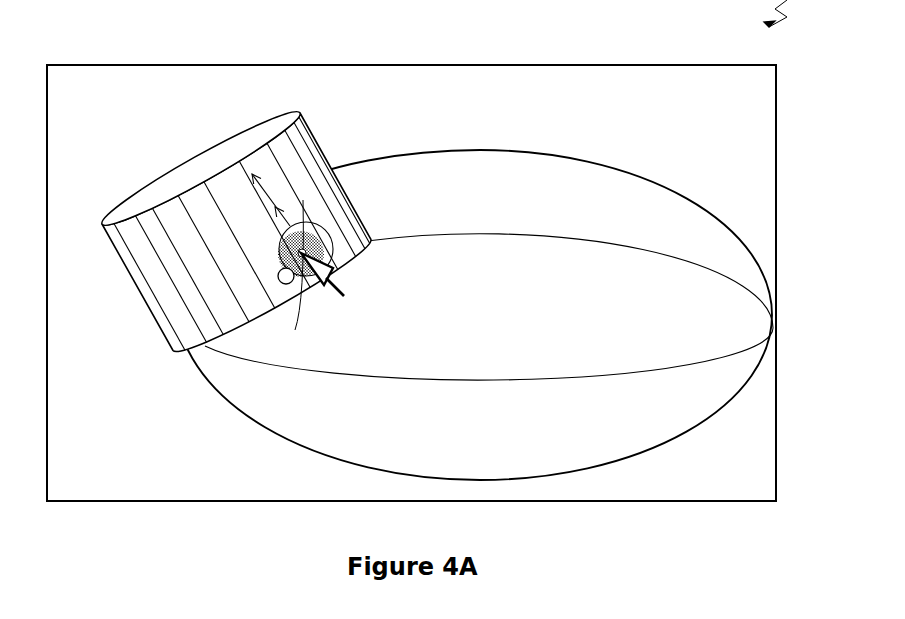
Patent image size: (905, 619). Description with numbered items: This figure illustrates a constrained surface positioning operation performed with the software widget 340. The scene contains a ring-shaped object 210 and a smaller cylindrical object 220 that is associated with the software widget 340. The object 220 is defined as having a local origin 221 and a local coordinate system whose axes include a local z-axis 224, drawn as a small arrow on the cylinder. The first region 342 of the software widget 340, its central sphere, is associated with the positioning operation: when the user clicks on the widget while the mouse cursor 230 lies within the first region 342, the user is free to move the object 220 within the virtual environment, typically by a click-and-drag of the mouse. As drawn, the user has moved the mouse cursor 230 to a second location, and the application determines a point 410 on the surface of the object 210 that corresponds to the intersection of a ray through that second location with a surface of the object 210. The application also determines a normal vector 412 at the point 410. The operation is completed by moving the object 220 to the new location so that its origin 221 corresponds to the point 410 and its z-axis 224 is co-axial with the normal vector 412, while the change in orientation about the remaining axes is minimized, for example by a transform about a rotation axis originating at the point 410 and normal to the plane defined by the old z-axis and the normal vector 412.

The object 210 is at (507, 152).
The object 220 is at (165, 172).
The local z-axis 224 is at (250, 172).
The mouse cursor 230 is at (295, 330).
The software widget 340 is at (362, 185).
The first region 342 is at (301, 253).
The point 410 is at (363, 228).
The local origin 221 is at (331, 237).
The normal vector 412 is at (280, 282).